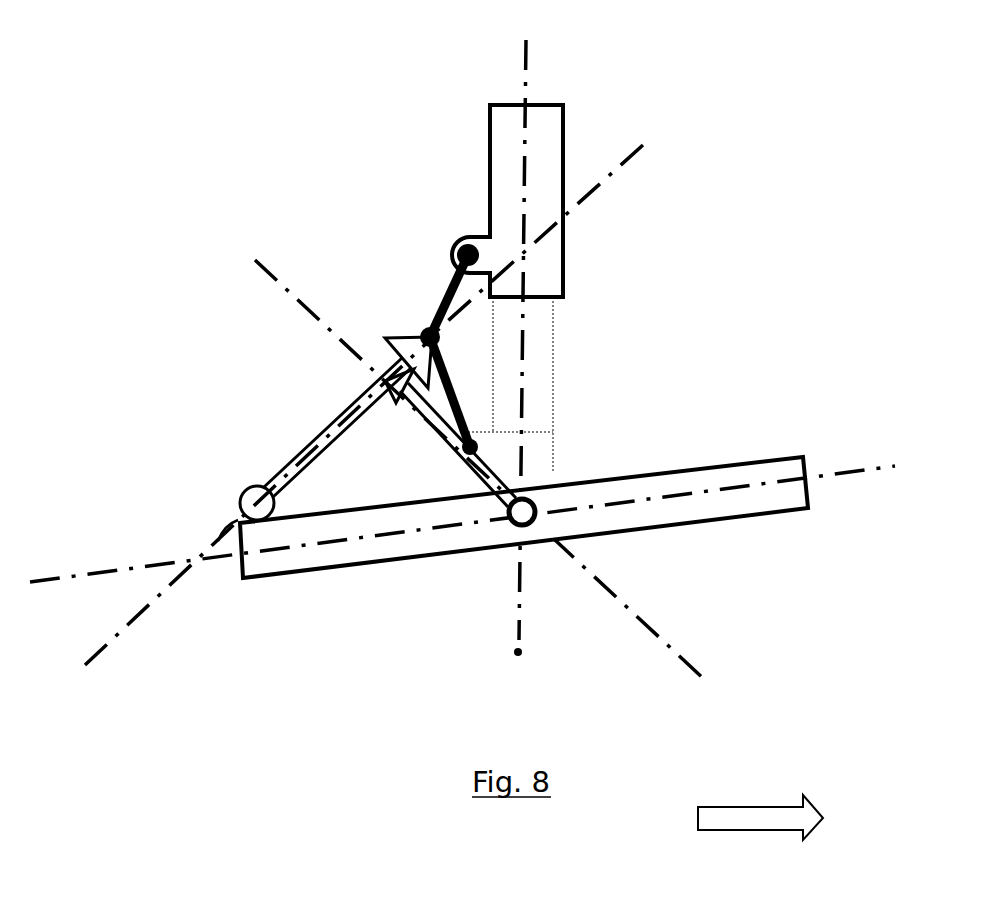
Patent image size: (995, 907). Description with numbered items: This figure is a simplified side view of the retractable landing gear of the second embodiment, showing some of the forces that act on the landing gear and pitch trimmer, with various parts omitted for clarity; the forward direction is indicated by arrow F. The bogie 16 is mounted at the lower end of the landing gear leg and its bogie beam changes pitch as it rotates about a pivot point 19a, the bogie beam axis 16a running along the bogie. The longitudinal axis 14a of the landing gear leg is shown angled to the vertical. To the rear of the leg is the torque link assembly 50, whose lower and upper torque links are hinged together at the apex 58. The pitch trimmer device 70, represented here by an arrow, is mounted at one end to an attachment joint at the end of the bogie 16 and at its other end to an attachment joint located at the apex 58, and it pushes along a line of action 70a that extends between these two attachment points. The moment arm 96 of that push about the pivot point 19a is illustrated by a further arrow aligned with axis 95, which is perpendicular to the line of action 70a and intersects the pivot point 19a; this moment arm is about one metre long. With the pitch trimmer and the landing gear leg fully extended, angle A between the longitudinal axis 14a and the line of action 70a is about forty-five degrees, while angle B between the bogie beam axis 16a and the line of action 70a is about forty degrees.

The longitudinal axis of the landing gear leg 14a is at (533, 73).
The line of action 70a is at (617, 172).
The axis 95 is at (288, 284).
The bogie 16 is at (597, 493).
The bogie beam axis 16a is at (693, 493).
The pitch trimmer device 70 is at (320, 433).
The moment arm 96 is at (420, 432).
The apex of the torque link assembly 58 is at (425, 333).
The torque link assembly 50 is at (447, 373).
The pivot point 19a is at (535, 525).
The angle A is at (519, 285).
The angle B is at (227, 547).
The arrow F is at (742, 815).